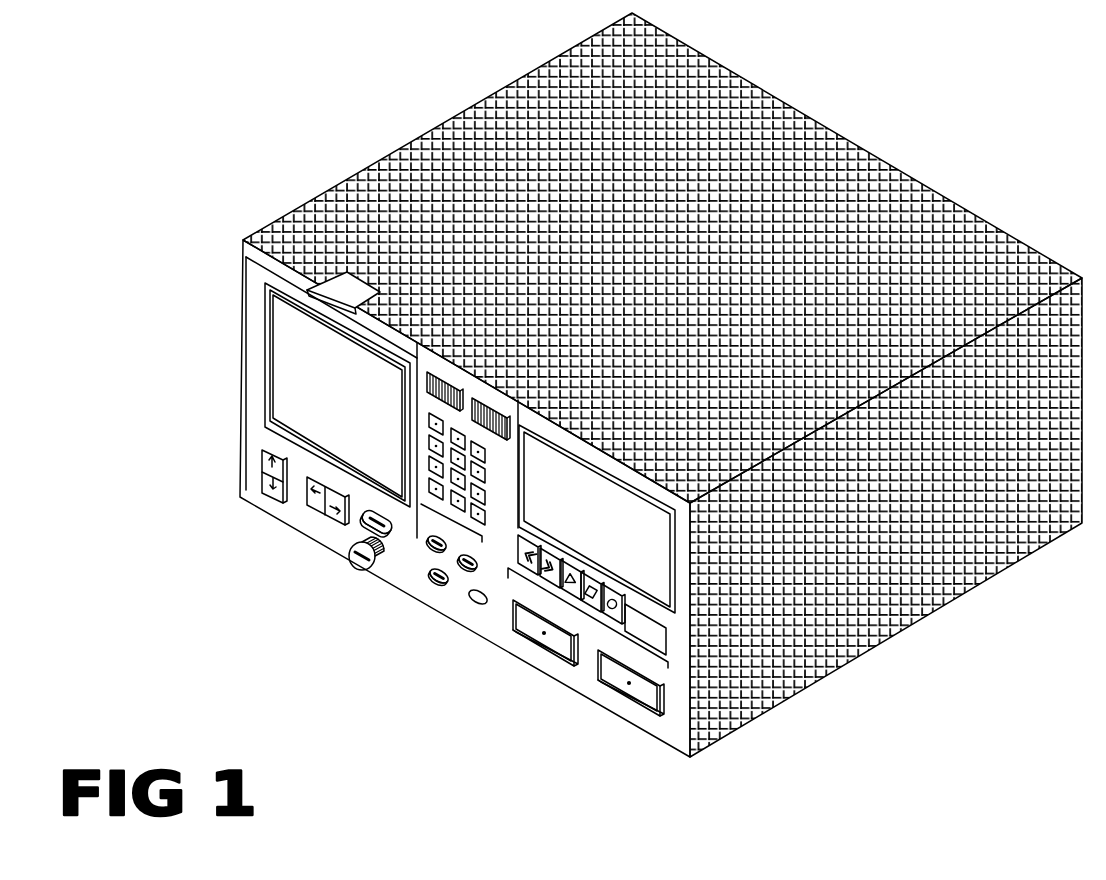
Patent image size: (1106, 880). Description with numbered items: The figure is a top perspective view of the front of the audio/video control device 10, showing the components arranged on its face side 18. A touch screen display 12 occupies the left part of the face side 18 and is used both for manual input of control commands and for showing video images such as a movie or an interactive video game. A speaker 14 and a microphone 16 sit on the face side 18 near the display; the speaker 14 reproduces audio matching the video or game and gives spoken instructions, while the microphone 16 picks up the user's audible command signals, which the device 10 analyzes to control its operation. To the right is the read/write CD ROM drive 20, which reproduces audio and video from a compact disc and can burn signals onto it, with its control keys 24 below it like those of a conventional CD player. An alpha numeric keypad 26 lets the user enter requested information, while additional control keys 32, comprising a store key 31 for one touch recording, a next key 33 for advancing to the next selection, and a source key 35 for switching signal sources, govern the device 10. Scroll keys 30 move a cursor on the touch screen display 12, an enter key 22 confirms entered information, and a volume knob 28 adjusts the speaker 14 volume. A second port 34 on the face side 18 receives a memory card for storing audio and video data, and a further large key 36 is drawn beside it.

The audio/video control device 10 is at (172, 220).
The touch screen display 12 is at (282, 357).
The speaker 14 is at (449, 376).
The microphone 16 is at (492, 403).
The face side 18 is at (655, 724).
The read/write compact disc (CD) ROM drive 20 is at (642, 548).
The enter key 22 is at (322, 512).
The control keys 24 is at (588, 620).
The alpha numeric keypad 26 is at (353, 569).
The volume knob 28 is at (366, 530).
The scroll keys 30 is at (274, 498).
The store key 31 is at (466, 573).
The additional control keys 32 is at (353, 735).
The next key 33 is at (431, 546).
The second port 34 is at (543, 648).
The source key 35 is at (437, 584).
The large push button 36 is at (632, 702).